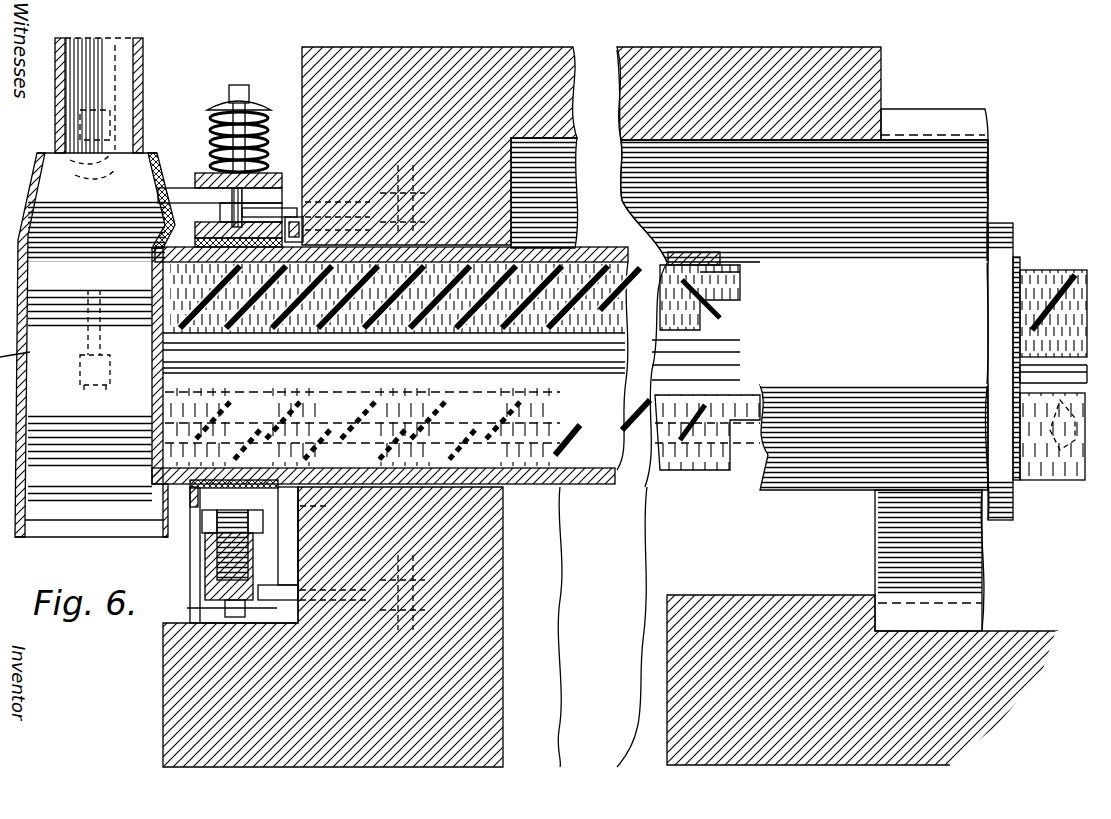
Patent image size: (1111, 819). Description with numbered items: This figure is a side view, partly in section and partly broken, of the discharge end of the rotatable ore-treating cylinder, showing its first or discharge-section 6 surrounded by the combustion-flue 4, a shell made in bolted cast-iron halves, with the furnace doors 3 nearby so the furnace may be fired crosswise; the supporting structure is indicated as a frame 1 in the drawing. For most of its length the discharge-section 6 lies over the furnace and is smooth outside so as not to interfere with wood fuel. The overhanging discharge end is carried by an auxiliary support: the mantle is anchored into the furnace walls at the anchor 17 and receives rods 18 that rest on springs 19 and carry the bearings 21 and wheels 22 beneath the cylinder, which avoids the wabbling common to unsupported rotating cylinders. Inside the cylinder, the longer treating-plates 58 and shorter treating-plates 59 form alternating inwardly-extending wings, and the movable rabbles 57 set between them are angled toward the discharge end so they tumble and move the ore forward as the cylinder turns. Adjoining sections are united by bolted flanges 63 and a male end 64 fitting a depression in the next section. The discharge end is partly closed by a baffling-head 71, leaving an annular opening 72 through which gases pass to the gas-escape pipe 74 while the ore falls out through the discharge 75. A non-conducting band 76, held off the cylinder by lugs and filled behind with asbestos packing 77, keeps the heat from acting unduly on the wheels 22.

The frame 1 is at (432, 56).
The doors 3 is at (15, 354).
The combustion-flue 4 is at (1000, 192).
The discharge-section 6 is at (746, 361).
The anchor 17 is at (300, 213).
The rods 18 is at (268, 180).
The springs 19 is at (250, 125).
The bearings 21 is at (205, 555).
The wheels 22 is at (242, 551).
The movable rabbles 57 is at (300, 272).
The longer treating-plates or wings 58 is at (165, 345).
The shorter treating-plates or wings 59 is at (325, 410).
The flanges 63 is at (1005, 232).
The male end 64 is at (1018, 262).
The baffling-head 71 is at (155, 395).
The annular space or opening 72 is at (153, 470).
The gas-escape pipe 74 is at (62, 95).
The discharge 75 is at (45, 537).
The non-conducting band 76 is at (200, 535).
The asbestos packing 77 is at (195, 497).